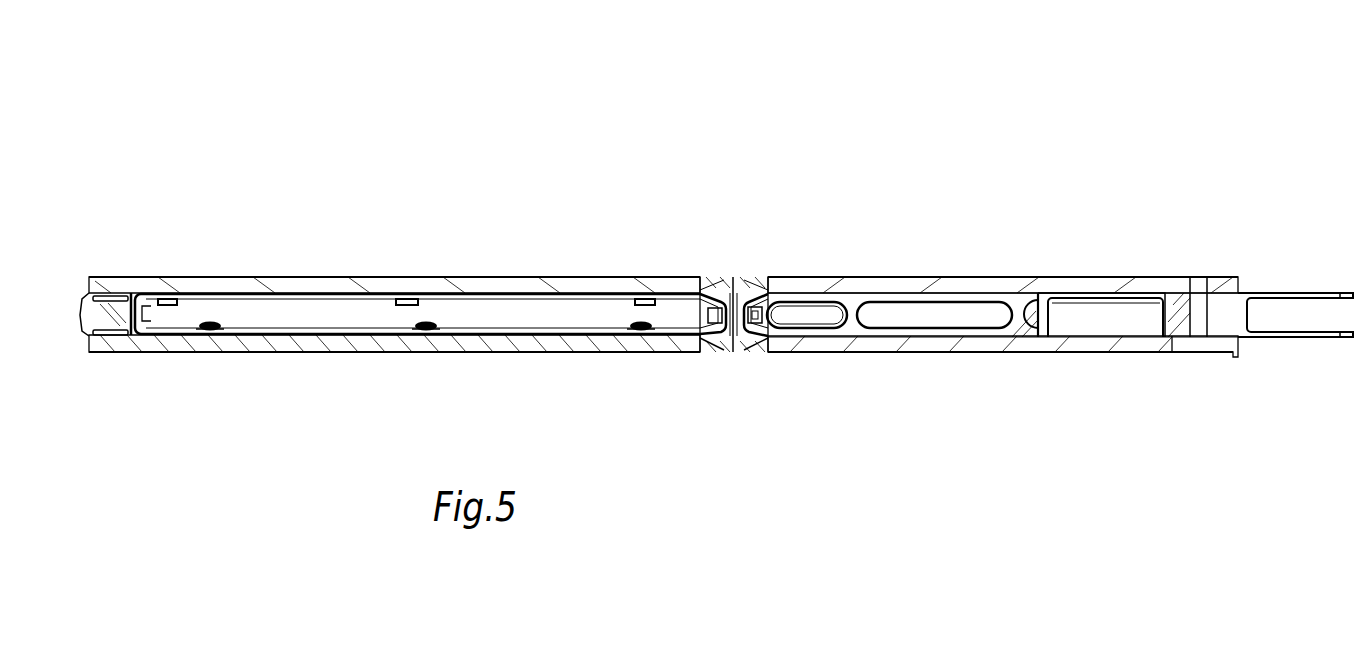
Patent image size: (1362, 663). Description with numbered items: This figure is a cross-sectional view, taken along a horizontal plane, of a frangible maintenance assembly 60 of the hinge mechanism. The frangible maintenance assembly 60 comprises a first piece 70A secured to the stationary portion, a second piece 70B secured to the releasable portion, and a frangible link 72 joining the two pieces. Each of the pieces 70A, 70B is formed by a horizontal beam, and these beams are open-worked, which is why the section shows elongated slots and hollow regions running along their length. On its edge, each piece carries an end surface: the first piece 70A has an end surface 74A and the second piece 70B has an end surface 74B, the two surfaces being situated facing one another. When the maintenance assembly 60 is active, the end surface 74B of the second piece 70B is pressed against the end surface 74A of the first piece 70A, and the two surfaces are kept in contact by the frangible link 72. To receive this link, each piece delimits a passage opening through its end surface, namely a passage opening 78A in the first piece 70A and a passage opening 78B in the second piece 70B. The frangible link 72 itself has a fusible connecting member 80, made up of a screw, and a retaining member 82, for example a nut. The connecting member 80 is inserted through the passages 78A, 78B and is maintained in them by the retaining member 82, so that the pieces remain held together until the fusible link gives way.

The frangible maintenance assembly 60 is at (930, 134).
The first piece 70A is at (1087, 270).
The second piece 70B is at (378, 270).
The frangible link 72 is at (738, 280).
The end surface 74A is at (699, 290).
The end surface 74B is at (752, 353).
The passage opening 78A is at (748, 282).
The passage opening 78B is at (723, 284).
The fusible connecting member 80 is at (697, 318).
The retaining member 82 is at (778, 283).